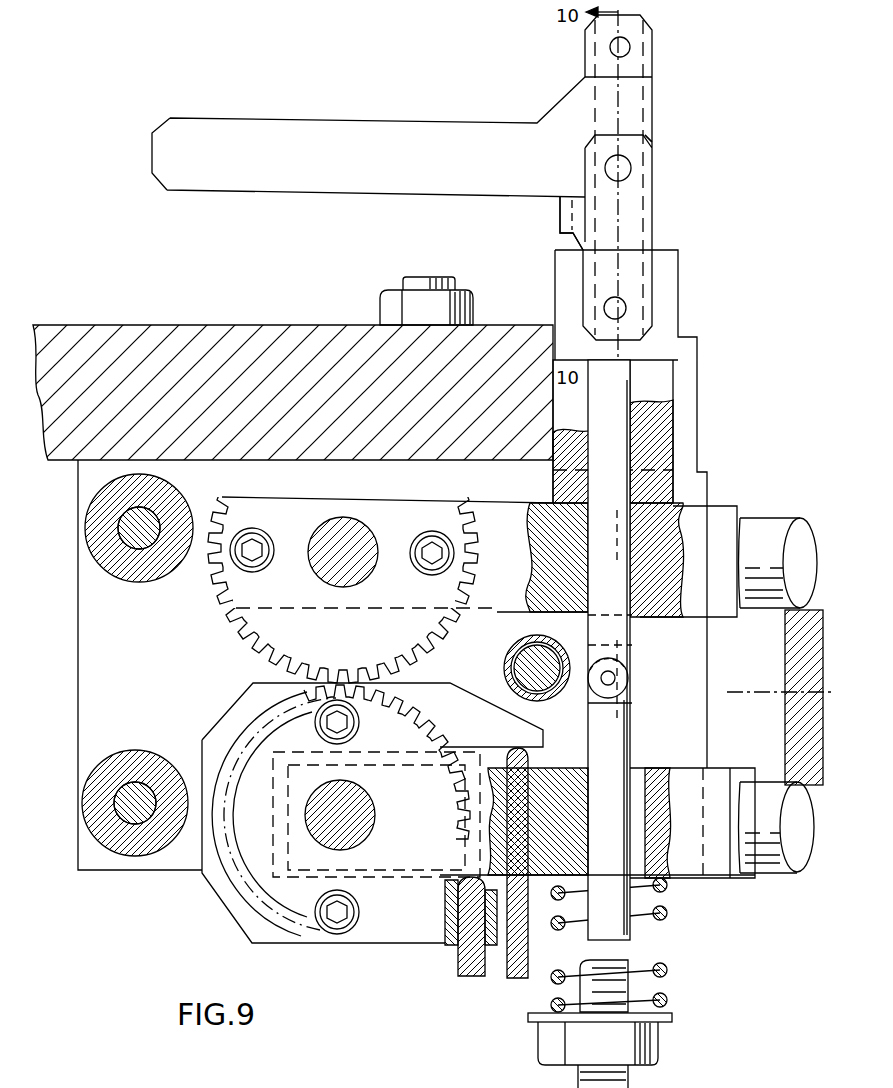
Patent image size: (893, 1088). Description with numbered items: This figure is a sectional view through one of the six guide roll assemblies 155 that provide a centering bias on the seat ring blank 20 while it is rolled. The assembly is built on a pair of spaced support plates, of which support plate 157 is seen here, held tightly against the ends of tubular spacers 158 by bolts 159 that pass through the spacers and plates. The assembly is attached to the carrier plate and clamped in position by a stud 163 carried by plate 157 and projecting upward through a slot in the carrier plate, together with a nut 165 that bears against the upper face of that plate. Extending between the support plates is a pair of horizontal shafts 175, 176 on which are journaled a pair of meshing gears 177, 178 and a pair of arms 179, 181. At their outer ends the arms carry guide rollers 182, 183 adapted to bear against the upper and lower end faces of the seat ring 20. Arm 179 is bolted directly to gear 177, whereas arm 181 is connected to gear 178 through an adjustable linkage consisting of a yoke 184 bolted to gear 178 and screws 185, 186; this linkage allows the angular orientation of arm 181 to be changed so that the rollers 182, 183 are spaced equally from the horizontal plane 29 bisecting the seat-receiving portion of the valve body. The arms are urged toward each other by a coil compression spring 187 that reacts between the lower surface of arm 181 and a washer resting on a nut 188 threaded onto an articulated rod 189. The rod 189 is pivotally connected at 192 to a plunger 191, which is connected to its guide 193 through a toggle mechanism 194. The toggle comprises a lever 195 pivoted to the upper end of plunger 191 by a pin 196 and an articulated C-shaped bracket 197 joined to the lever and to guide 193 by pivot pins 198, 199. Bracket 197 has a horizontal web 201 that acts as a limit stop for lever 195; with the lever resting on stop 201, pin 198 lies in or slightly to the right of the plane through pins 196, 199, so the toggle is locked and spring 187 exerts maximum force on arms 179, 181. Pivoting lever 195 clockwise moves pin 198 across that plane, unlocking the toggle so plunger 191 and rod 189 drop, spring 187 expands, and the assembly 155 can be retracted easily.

The ring blank 20 is at (785, 645).
The horizontal plane 29 is at (752, 692).
The guide roll assembly 155 is at (745, 460).
The support plate 157 is at (78, 648).
The tubular spacer 158 is at (105, 560).
The bolt 159 is at (132, 524).
The stud 163 is at (438, 280).
The nut 165 is at (478, 313).
The horizontal shaft 175 is at (370, 540).
The horizontal shaft 176 is at (375, 830).
The gear 177 is at (248, 638).
The gear 178 is at (248, 705).
The arm 179 is at (515, 498).
The arm 181 is at (676, 770).
The guide roller 182 is at (775, 518).
The guide roller 183 is at (790, 878).
The yoke 184 is at (420, 945).
The screw 185 is at (466, 978).
The screw 186 is at (512, 980).
The coil compression spring 187 is at (668, 973).
The nut 188 is at (659, 1050).
The articulated rod 189 is at (632, 735).
The plunger 191 is at (630, 648).
The pivotal connection 192 is at (618, 680).
The guide 193 is at (680, 387).
The toggle mechanism 194 is at (660, 190).
The lever 195 is at (452, 128).
The pin 196 is at (632, 47).
The C-shaped bracket 197 is at (653, 140).
The pivot pin 198 is at (604, 168).
The pivot pin 199 is at (627, 308).
The horizontal web 201 is at (560, 232).